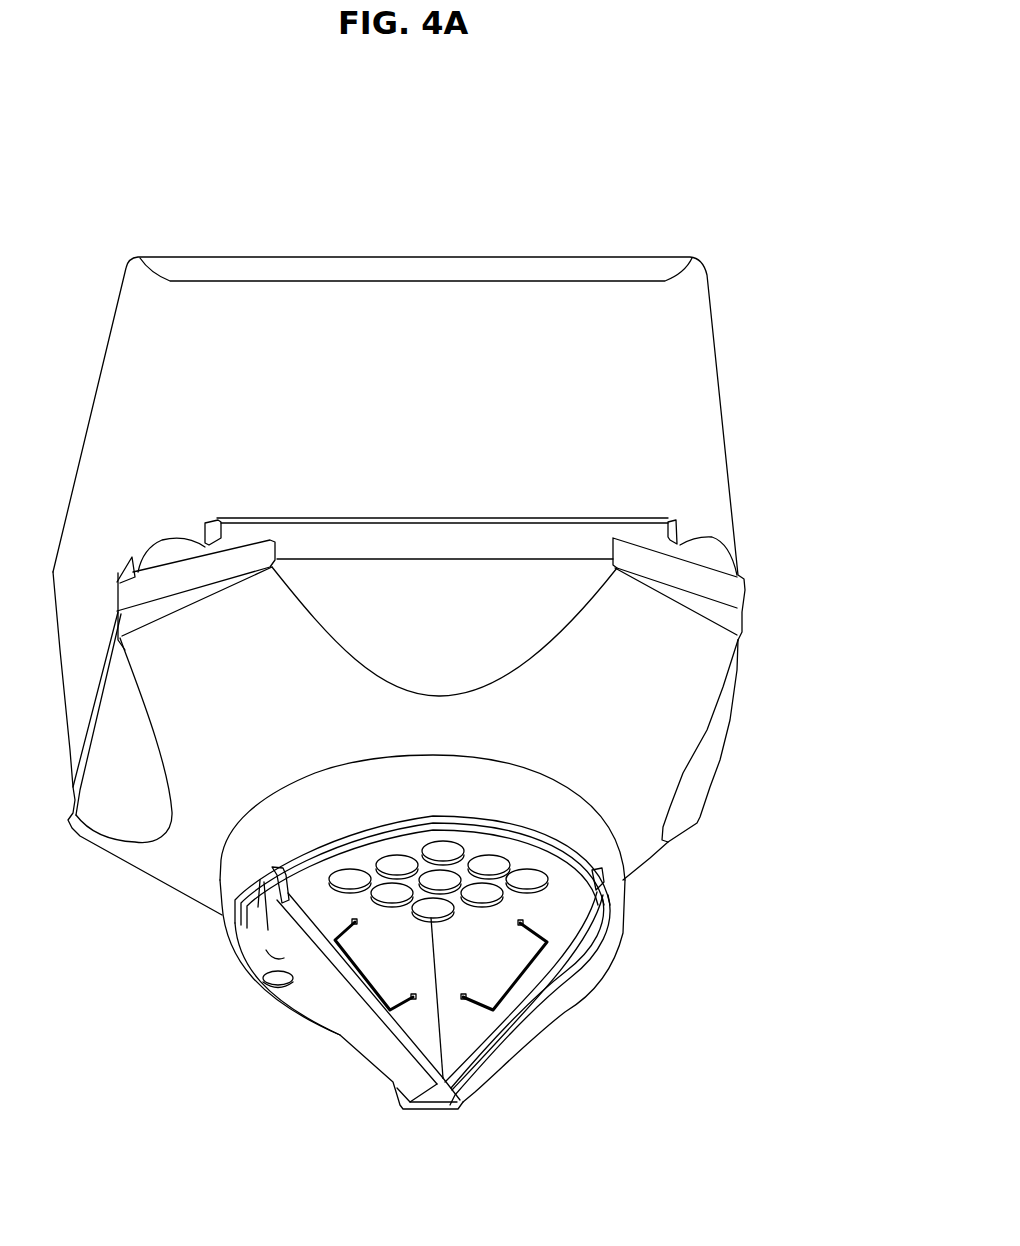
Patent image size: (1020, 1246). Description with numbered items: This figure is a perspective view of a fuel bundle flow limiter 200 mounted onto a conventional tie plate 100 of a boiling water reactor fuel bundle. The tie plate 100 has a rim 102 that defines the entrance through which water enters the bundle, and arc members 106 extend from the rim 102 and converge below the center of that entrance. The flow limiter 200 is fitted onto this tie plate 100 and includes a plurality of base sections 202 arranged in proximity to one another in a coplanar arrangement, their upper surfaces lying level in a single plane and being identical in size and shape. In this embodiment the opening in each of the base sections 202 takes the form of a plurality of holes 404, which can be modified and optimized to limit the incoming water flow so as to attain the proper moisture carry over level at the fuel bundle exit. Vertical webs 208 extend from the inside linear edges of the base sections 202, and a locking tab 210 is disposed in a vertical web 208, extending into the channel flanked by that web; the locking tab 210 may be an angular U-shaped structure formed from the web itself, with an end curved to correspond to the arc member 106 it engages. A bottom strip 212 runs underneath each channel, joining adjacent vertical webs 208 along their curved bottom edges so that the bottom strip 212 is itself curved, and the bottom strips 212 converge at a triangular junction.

The tie plate 100 is at (760, 417).
The rim 102 is at (551, 790).
The arc members 106 is at (260, 881).
The fuel bundle flow limiter 200 is at (462, 932).
The base sections 202 is at (253, 957).
The vertical webs 208 is at (403, 1032).
The locking tab 210 is at (527, 975).
The bottom strip 212 is at (385, 1068).
The holes 404 is at (548, 883).